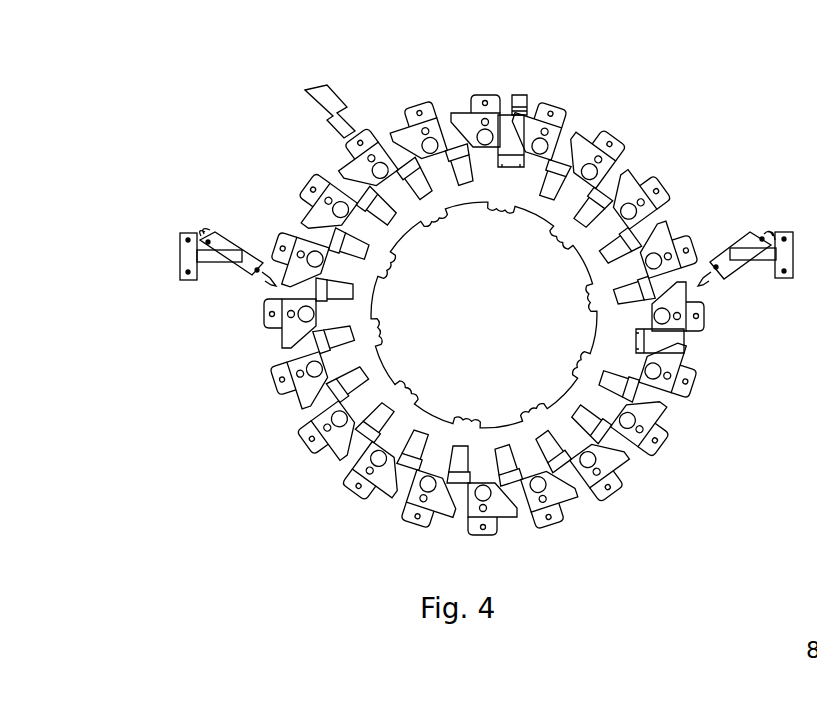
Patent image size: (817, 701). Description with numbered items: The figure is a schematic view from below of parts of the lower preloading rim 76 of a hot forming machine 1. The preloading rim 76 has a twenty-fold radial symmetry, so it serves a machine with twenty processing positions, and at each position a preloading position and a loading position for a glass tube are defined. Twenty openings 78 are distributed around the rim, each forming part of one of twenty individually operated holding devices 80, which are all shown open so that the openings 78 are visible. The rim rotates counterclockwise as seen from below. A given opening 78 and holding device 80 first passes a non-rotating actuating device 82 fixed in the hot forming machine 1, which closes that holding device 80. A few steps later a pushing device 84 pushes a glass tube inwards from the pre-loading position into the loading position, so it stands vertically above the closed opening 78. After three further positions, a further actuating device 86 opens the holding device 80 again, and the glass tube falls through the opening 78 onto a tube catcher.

The hot forming machine 1 is at (283, 144).
The lower preloading rim 76 is at (350, 462).
The opening 78 is at (672, 425).
The holding device 80 is at (708, 358).
The actuating device 82 is at (745, 232).
The pushing device 84 is at (327, 97).
The further actuating device 86 is at (180, 260).